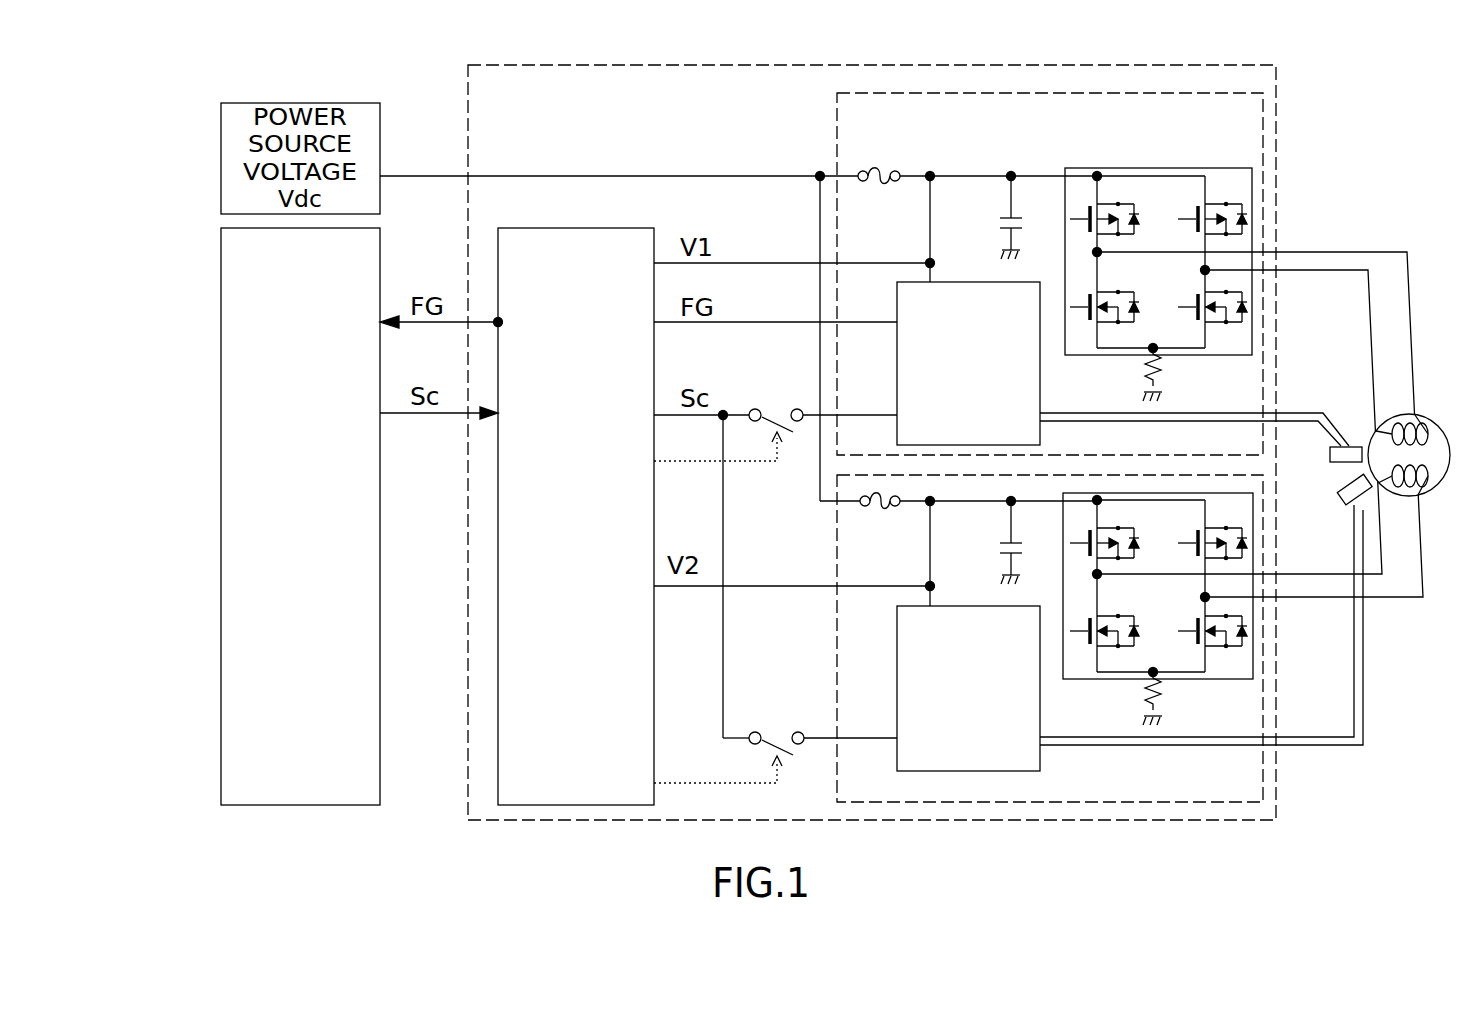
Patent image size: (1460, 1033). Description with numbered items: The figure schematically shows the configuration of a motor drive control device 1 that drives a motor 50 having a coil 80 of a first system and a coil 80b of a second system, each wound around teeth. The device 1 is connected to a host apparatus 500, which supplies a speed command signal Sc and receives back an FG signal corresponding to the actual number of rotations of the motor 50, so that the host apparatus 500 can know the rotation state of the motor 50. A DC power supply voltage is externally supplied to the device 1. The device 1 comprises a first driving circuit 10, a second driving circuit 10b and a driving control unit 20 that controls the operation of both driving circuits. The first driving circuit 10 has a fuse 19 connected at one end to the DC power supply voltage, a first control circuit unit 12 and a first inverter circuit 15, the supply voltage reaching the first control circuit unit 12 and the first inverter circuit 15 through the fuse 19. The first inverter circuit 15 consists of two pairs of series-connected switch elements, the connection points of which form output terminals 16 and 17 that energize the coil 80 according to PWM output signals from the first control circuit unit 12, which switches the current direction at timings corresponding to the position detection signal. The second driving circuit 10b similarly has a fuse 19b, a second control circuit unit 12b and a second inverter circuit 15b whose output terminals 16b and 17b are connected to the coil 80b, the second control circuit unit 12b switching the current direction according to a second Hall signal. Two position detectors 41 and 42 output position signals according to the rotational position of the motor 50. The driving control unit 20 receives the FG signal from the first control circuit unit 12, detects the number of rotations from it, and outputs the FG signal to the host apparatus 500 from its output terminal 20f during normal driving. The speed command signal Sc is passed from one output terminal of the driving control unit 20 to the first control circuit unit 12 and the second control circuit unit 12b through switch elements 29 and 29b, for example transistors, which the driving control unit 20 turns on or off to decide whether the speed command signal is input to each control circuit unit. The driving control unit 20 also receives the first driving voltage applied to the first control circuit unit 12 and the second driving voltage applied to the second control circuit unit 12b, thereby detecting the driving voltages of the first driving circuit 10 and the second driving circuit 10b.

The motor drive control device 1 is at (929, 64).
The first driving circuit 10 is at (1168, 93).
The second driving circuit 10b is at (1188, 802).
The first control circuit unit 12 is at (897, 348).
The second control circuit unit 12b is at (897, 636).
The first inverter circuit 15 is at (1253, 205).
The second inverter circuit 15b is at (1253, 658).
The output terminal 16 is at (1099, 252).
The output terminal 16b is at (1099, 574).
The output terminal 17 is at (1207, 270).
The output terminal 17b is at (1207, 597).
The fuse 19 is at (882, 185).
The fuse 19b is at (882, 510).
The driving control unit 20 is at (567, 228).
The output terminal 20f is at (500, 322).
The switch element 29 is at (778, 405).
The switch element 29b is at (776, 730).
The position detector 41 is at (1331, 461).
The position detector 42 is at (1340, 501).
The motor 50 is at (1372, 384).
The coil of the first system 80 is at (1395, 428).
The coil of the second system 80b is at (1394, 470).
The host apparatus 500 is at (221, 258).